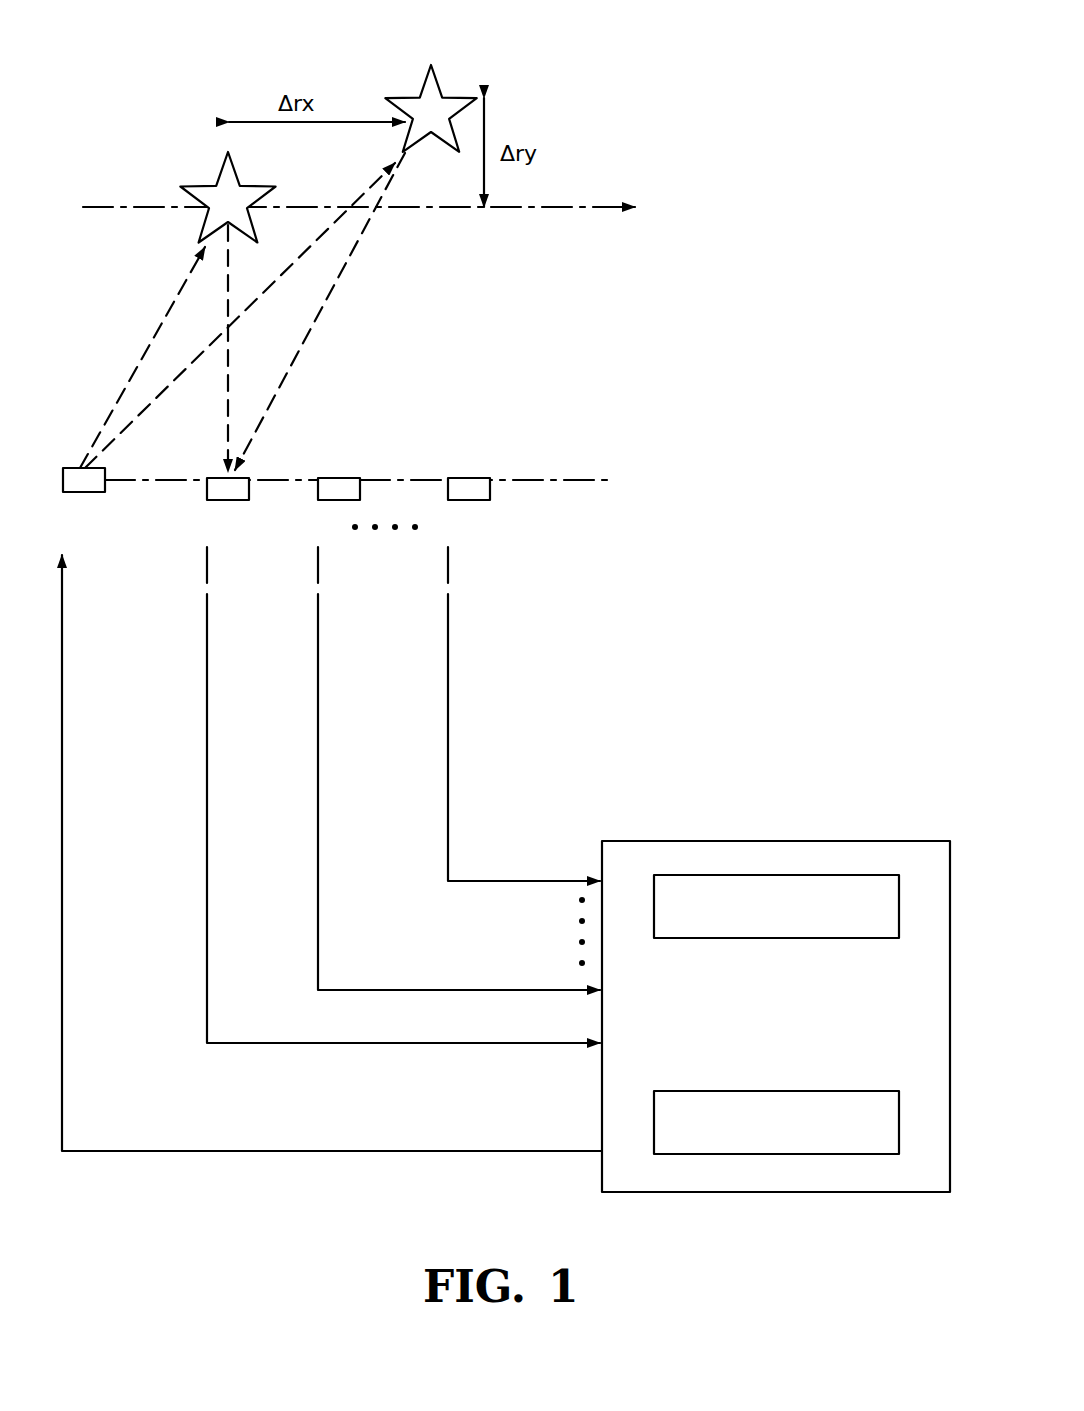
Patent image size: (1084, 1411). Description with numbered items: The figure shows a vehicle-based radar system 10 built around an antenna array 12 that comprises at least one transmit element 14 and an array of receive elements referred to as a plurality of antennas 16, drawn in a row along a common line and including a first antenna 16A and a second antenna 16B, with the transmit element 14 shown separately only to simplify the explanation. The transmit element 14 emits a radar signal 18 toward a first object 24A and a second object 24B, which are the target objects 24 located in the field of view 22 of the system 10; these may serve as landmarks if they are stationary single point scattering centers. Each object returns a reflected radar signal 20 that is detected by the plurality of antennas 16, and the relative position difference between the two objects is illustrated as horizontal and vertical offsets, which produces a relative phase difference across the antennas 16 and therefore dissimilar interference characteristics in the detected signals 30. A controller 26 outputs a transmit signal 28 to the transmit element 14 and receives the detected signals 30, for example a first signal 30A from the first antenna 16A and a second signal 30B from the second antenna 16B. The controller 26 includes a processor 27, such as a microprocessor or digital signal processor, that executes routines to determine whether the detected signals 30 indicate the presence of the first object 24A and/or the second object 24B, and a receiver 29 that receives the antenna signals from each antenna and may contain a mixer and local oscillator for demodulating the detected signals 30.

The system 10 is at (738, 180).
The antenna array 12 is at (419, 482).
The transmit element 14 is at (78, 468).
The plurality of antennas 16 is at (359, 522).
The first antenna 16A is at (245, 478).
The second antenna 16B is at (383, 483).
The radar signal 18 is at (205, 347).
The reflected radar signal 20 is at (228, 352).
The field of view 22 is at (334, 129).
The target objects 24 is at (263, 134).
The first object 24A is at (217, 192).
The second object 24B is at (420, 103).
The controller 26 is at (731, 1027).
The processor 27 is at (810, 875).
The transmit signal 28 is at (240, 1151).
The receiver 29 is at (823, 1154).
The detected signals 30 is at (371, 823).
The first signal 30A is at (278, 1045).
The second signal 30B is at (340, 990).